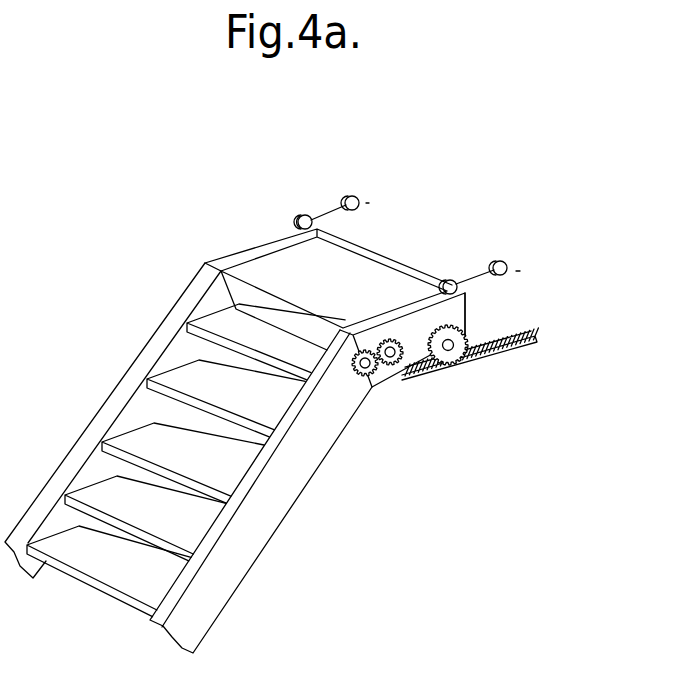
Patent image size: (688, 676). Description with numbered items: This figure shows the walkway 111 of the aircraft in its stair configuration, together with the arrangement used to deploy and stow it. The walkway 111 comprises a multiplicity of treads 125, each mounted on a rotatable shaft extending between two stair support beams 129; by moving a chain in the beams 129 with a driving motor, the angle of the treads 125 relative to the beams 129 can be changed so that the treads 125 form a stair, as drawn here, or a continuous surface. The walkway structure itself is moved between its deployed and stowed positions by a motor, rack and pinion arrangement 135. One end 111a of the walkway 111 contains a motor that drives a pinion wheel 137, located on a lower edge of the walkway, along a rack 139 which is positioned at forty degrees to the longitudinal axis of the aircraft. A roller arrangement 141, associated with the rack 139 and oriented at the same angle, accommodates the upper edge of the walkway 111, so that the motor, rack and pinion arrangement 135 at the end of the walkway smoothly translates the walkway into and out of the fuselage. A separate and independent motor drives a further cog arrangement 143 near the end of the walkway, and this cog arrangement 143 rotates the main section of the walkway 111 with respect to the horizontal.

The walkway 111 is at (298, 389).
The end of the walkway 111a is at (355, 293).
The tread 125 is at (180, 375).
The stair support beam 129 is at (289, 471).
The motor, rack and pinion arrangement 135 is at (463, 373).
The pinion wheel 137 is at (444, 356).
The rack 139 is at (513, 328).
The roller arrangement 141 is at (346, 197).
The cog arrangement 143 is at (374, 343).